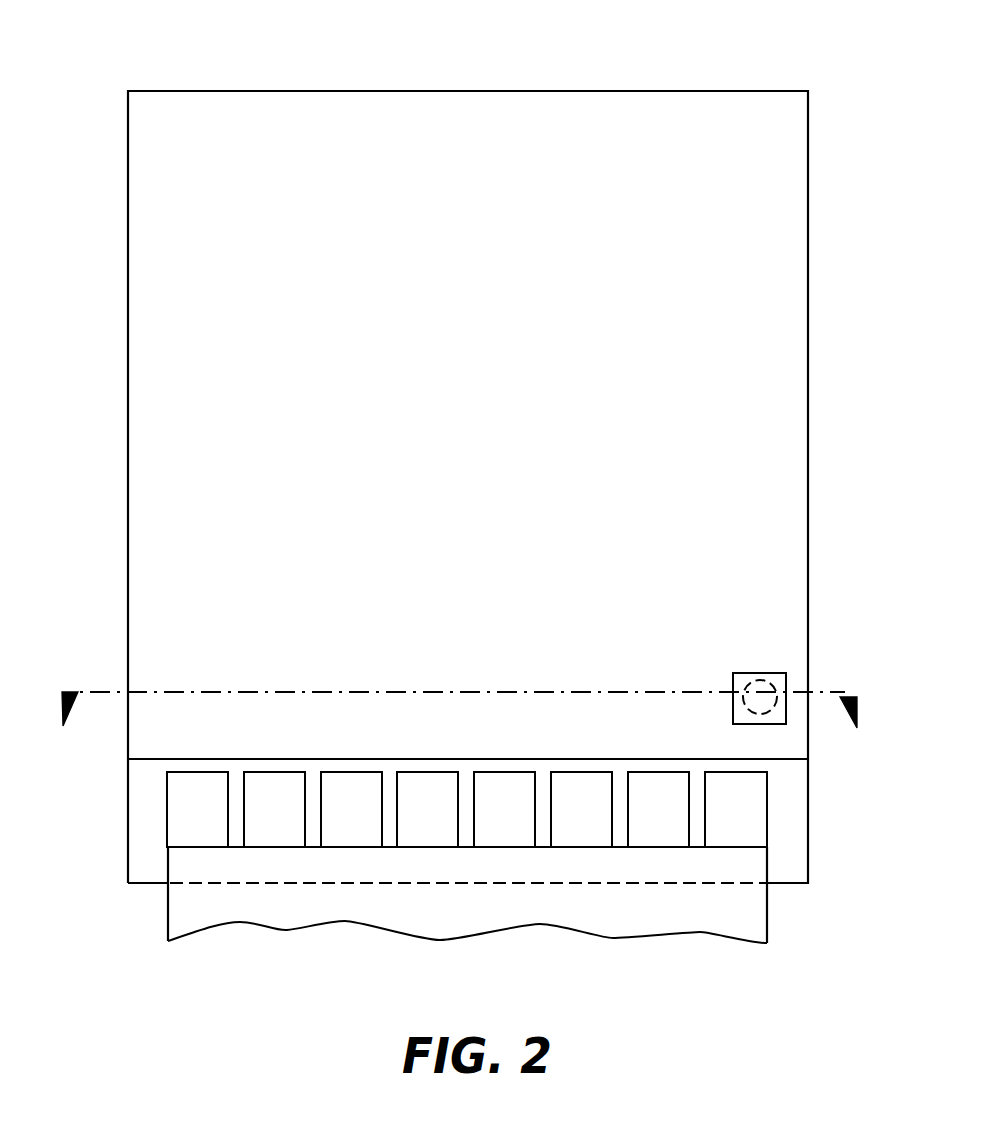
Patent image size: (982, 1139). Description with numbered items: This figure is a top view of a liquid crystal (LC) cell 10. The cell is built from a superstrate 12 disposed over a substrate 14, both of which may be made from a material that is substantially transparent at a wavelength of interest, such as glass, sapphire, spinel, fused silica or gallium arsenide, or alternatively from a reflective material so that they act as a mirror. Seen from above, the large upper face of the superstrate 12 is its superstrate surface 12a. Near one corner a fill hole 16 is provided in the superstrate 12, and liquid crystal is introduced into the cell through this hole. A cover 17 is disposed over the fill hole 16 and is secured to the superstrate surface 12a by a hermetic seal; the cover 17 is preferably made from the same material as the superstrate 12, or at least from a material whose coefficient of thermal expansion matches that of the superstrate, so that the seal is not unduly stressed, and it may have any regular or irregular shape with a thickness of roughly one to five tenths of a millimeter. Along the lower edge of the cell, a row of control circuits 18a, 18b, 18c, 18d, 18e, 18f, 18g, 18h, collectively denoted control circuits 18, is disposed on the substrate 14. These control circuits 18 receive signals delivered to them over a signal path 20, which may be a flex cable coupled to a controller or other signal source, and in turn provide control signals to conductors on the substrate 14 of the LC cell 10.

The liquid crystal (LC) cell 10 is at (461, 478).
The superstrate 12 is at (808, 277).
The superstrate surface 12a is at (627, 411).
The substrate 14 is at (797, 841).
The fill hole 16 is at (767, 683).
The cover 17 is at (741, 673).
The control circuits 18 is at (467, 777).
The control circuit 18a is at (197, 809).
The control circuit 18b is at (274, 809).
The control circuit 18c is at (351, 809).
The control circuit 18d is at (427, 809).
The control circuit 18e is at (504, 809).
The control circuit 18f is at (581, 809).
The control circuit 18g is at (658, 809).
The control circuit 18h is at (736, 809).
The signal path 20 is at (745, 911).